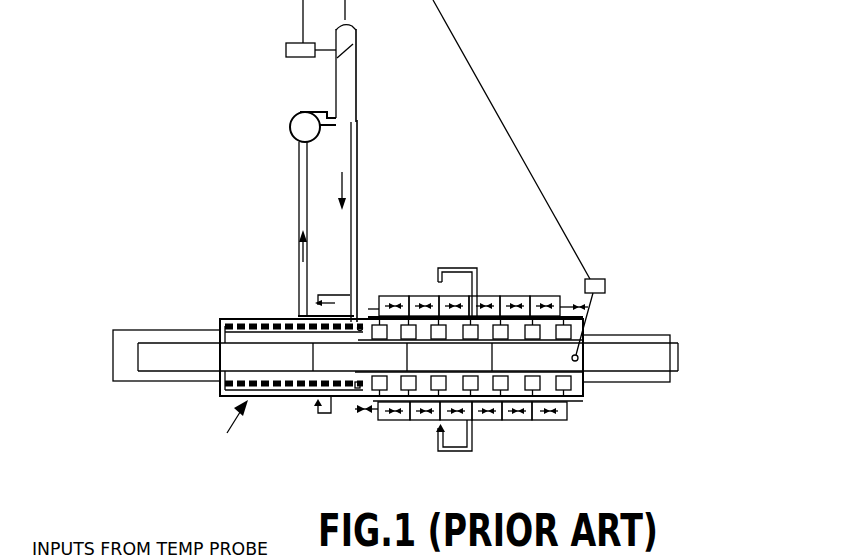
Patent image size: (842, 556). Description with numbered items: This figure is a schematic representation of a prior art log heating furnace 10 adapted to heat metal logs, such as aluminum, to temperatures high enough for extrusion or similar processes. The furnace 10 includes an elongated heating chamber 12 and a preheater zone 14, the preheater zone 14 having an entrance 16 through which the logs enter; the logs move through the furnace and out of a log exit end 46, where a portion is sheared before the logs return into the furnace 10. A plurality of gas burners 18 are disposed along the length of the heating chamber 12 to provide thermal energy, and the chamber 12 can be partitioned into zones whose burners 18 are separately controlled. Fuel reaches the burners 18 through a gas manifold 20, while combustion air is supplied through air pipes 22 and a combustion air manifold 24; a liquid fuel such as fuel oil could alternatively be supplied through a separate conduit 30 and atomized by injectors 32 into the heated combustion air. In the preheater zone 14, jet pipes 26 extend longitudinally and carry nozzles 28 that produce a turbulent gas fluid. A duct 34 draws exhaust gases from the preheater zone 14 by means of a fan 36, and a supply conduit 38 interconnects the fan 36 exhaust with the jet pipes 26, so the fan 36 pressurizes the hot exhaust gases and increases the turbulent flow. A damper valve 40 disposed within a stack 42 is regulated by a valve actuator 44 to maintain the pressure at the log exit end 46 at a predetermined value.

The log heating furnace 10 is at (230, 429).
The elongated heating chamber 12 is at (563, 353).
The preheater zone 14 is at (162, 357).
The entrance 16 is at (100, 351).
The gas burners 18 is at (412, 338).
The gas manifold 20 is at (577, 399).
The air pipes 22 is at (388, 295).
The combustion air manifold 24 is at (422, 295).
The jet pipes 26 is at (220, 388).
The nozzles 28 is at (466, 268).
The separate conduit 30 is at (352, 411).
The injectors 32 is at (370, 418).
The duct 34 is at (299, 180).
The fan 36 is at (297, 123).
The supply conduit 38 is at (362, 180).
The damper valve 40 is at (355, 50).
The stack 42 is at (357, 90).
The valve actuator 44 is at (288, 45).
The log exit end 46 is at (606, 281).